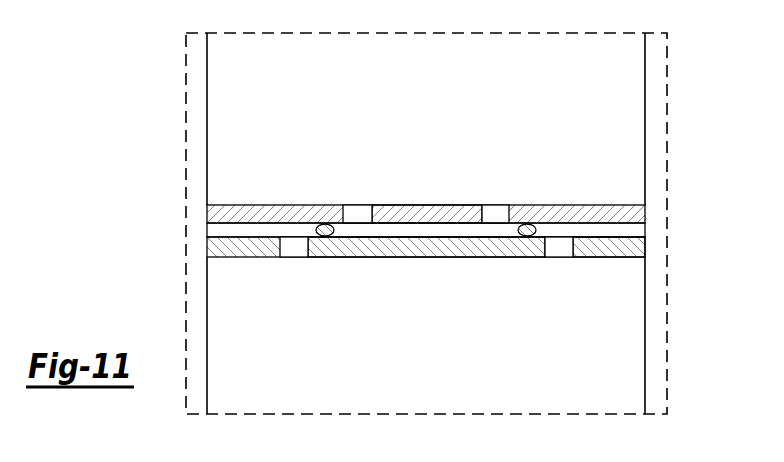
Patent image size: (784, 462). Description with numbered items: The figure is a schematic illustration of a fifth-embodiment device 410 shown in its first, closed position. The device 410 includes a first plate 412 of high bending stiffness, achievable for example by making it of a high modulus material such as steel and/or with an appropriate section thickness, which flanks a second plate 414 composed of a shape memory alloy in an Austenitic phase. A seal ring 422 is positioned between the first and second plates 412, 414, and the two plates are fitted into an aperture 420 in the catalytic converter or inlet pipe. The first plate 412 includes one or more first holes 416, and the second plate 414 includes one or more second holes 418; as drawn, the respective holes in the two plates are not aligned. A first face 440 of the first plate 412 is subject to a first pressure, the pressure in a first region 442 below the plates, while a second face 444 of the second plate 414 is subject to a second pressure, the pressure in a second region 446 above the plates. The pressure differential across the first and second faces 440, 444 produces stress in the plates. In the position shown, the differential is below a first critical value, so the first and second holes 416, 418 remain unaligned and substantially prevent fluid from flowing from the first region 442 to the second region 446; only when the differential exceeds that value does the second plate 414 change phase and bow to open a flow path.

The device 410 is at (150, 70).
The first plate 412 is at (605, 258).
The second plate 414 is at (432, 210).
The first holes 416 is at (292, 262).
The second holes 418 is at (358, 210).
The aperture 420 is at (637, 229).
The seal ring 422 is at (334, 229).
The first face 440 is at (426, 282).
The first region 442 is at (238, 390).
The second face 444 is at (426, 178).
The second region 446 is at (238, 67).